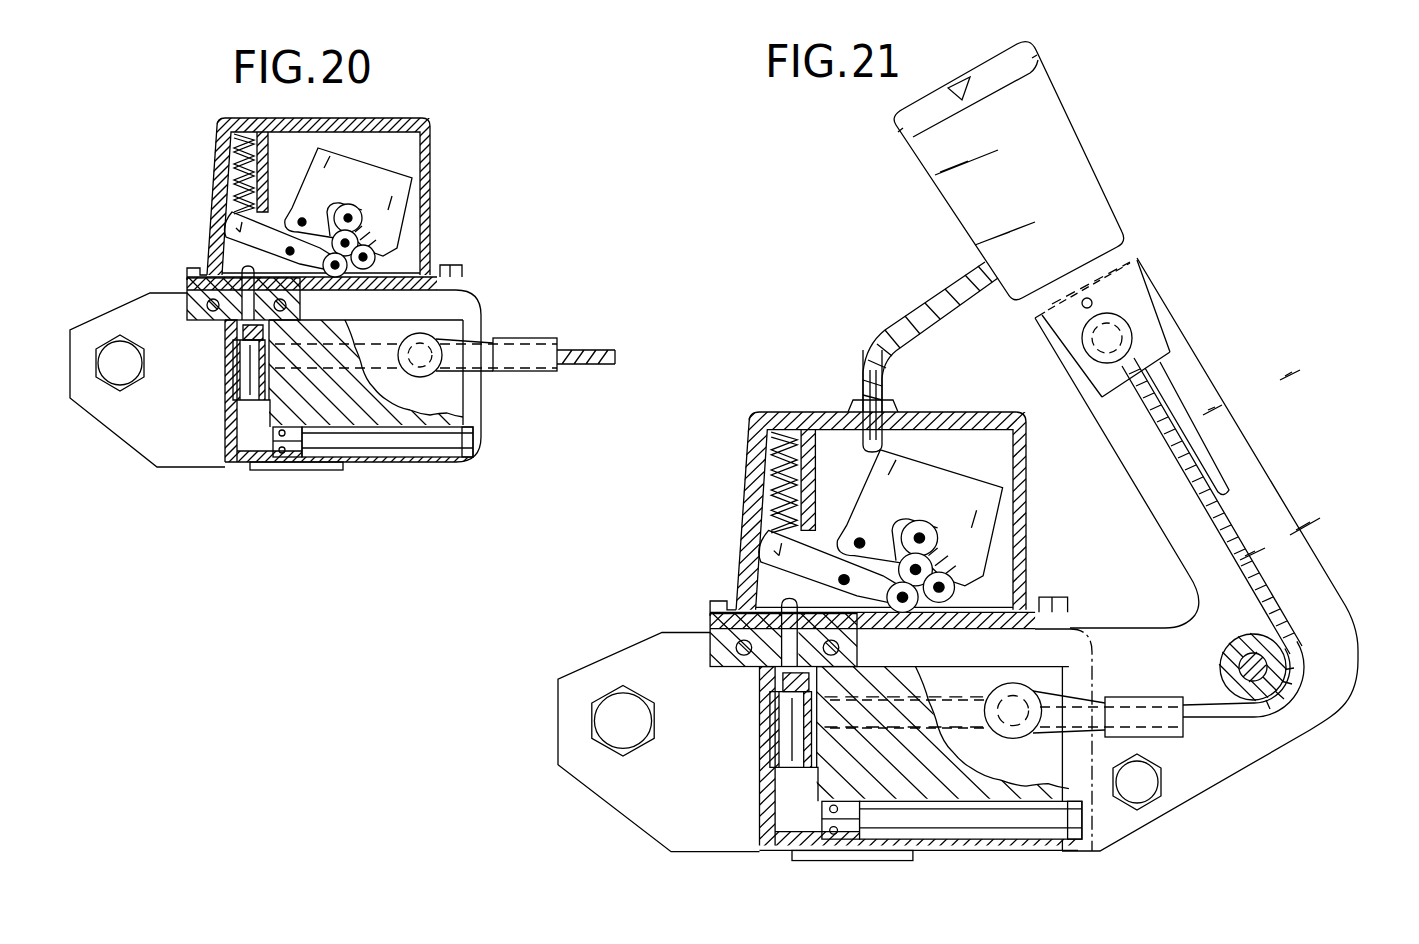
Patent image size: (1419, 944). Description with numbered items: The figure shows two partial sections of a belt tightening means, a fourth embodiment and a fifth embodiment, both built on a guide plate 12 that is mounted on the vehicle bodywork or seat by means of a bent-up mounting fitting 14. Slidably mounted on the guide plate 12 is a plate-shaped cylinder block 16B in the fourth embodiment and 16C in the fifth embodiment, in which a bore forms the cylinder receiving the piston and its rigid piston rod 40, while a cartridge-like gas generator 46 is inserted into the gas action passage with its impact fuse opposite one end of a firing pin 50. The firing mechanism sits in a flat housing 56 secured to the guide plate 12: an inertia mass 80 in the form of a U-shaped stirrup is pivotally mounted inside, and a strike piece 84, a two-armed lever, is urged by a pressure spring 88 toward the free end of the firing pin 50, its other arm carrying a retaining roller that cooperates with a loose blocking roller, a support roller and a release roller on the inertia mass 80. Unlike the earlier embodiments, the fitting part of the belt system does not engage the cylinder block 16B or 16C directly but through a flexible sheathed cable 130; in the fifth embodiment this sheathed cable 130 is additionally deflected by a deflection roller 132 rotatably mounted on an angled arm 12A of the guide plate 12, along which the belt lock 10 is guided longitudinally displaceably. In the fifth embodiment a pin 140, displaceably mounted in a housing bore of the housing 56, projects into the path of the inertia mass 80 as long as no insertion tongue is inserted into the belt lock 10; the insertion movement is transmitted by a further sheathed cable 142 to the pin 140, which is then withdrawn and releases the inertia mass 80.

In FIG. 21, the belt lock 10 is at (1083, 192).
In FIG. 21, the guide plate 12 is at (1125, 823).
In FIG. 21, the angled arm 12A is at (1253, 503).
In FIG. 20, the mounting fitting 14 is at (148, 438).
In FIG. 21, the mounting fitting 14 is at (625, 782).
In FIG. 20, the cylinder block 16B is at (358, 413).
In FIG. 21, the cylinder block 16C is at (847, 773).
In FIG. 21, the piston rod 40 is at (985, 827).
In FIG. 20, the gas generator 46 is at (247, 370).
In FIG. 21, the gas generator 46 is at (788, 717).
In FIG. 21, the firing pin 50 is at (788, 597).
In FIG. 20, the housing 56 is at (433, 214).
In FIG. 21, the housing 56 is at (1000, 415).
In FIG. 20, the inertia mass 80 is at (403, 186).
In FIG. 21, the inertia mass 80 is at (950, 486).
In FIG. 20, the strike piece 84 is at (220, 232).
In FIG. 21, the strike piece 84 is at (765, 553).
In FIG. 20, the pressure spring 88 is at (217, 170).
In FIG. 21, the pressure spring 88 is at (767, 443).
In FIG. 20, the sheathed cable 130 is at (577, 340).
In FIG. 21, the sheathed cable 130 is at (1267, 577).
In FIG. 21, the deflection roller 132 is at (1227, 668).
In FIG. 21, the pin 140 is at (873, 422).
In FIG. 21, the sheathed cable 142 is at (945, 312).